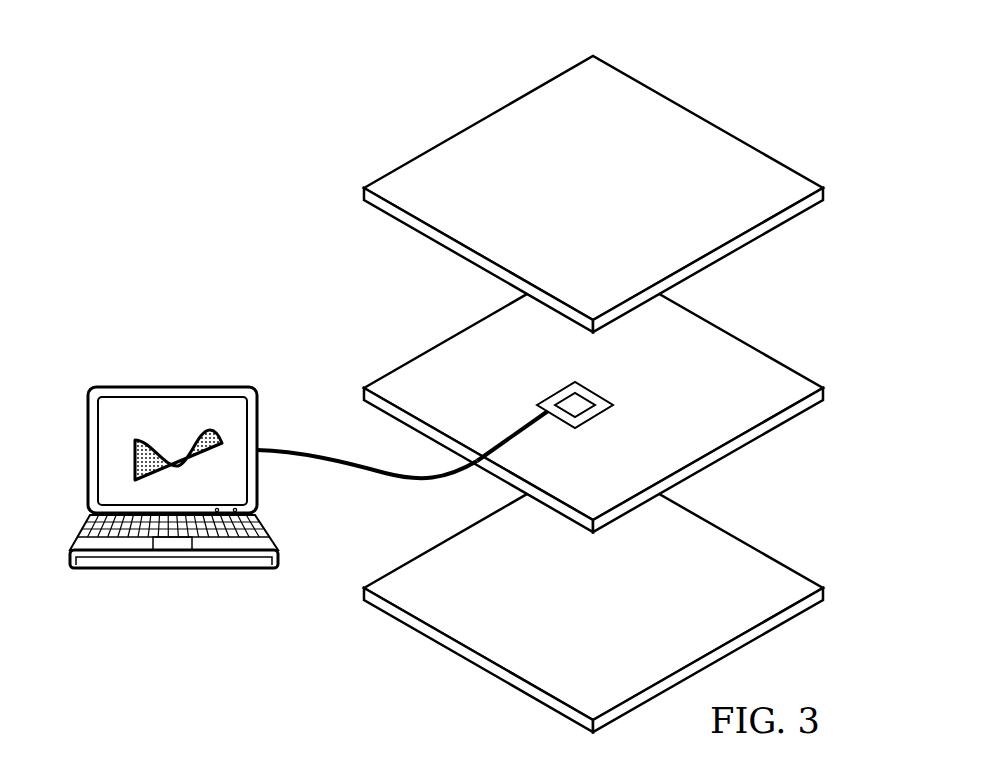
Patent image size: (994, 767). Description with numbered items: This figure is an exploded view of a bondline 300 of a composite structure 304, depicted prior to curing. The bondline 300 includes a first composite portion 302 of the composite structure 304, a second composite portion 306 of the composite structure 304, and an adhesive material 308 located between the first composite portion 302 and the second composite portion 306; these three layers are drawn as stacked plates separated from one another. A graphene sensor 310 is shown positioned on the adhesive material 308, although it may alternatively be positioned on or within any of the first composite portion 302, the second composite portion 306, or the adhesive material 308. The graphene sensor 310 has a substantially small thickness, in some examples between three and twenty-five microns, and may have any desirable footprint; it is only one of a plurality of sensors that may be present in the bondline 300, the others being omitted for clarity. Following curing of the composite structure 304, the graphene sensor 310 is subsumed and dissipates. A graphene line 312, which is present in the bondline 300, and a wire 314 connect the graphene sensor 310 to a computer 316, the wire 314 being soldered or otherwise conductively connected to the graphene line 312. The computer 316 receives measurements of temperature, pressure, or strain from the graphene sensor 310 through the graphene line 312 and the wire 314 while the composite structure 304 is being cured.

The bondline 300 is at (137, 75).
The first composite portion 302 is at (735, 547).
The composite structure 304 is at (593, 172).
The second composite portion 306 is at (735, 150).
The adhesive material 308 is at (735, 348).
The graphene sensor 310 is at (580, 405).
The graphene line 312 is at (517, 435).
The wire 314 is at (363, 473).
The computer 316 is at (173, 568).